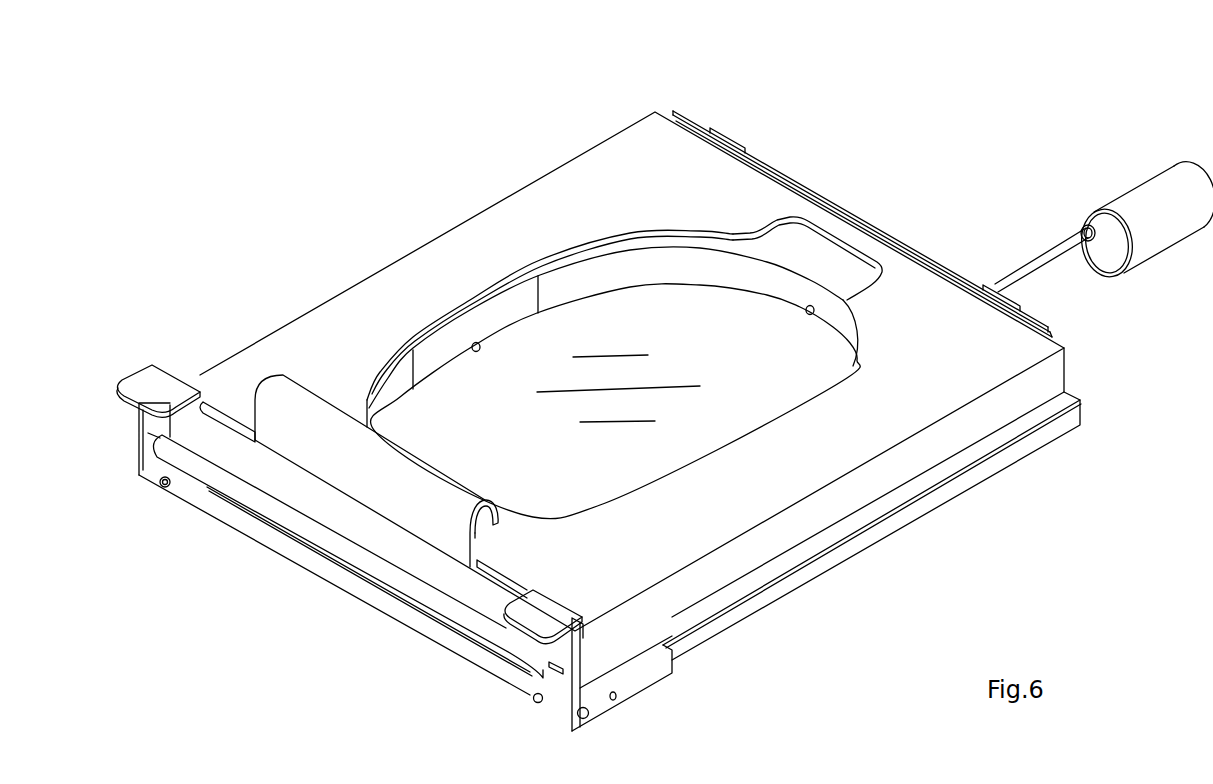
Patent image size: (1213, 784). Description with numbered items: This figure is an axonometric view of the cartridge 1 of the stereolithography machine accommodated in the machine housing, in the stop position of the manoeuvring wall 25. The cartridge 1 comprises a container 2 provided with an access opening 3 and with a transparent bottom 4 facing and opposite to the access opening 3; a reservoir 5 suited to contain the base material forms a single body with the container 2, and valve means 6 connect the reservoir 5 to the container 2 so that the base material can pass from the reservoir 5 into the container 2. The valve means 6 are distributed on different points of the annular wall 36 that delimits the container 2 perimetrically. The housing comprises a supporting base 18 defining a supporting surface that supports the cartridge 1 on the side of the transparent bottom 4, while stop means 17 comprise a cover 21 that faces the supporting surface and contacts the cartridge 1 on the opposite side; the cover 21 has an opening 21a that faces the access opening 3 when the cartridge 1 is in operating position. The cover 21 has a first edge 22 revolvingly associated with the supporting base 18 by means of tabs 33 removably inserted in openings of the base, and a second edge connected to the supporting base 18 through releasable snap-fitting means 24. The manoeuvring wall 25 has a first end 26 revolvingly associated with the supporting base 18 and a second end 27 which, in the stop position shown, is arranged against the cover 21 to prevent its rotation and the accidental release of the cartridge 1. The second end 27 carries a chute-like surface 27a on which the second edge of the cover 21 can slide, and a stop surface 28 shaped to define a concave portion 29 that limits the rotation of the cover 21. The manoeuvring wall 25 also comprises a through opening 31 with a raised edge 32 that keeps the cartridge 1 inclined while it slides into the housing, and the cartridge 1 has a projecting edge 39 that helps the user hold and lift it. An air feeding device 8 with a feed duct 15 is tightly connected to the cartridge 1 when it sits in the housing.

The cartridge 1 is at (388, 560).
The container 2 is at (502, 299).
The access opening 3 is at (551, 247).
The transparent bottom 4 is at (780, 390).
The reservoir 5 is at (803, 248).
The valve means 6 is at (463, 326).
The air feeding device 8 is at (1153, 195).
The feed duct 15 is at (1052, 253).
The stop means 17 is at (364, 239).
The supporting base 18 is at (745, 603).
The cover 21 is at (345, 325).
The opening 21a is at (597, 227).
The first edge 22 is at (769, 155).
The releasable snap-fitting means 24 is at (212, 379).
The manoeuvring wall 25 is at (147, 461).
The first end 26 is at (199, 524).
The second end 27 is at (489, 596).
The chute-like surface 27a is at (232, 401).
The stop surface 28 is at (310, 430).
The concave portion 29 is at (473, 536).
The through opening 31 is at (563, 667).
The edge 32 is at (535, 673).
The tabs 33 is at (992, 271).
The annular wall 36 is at (648, 263).
The edge 39 is at (182, 488).